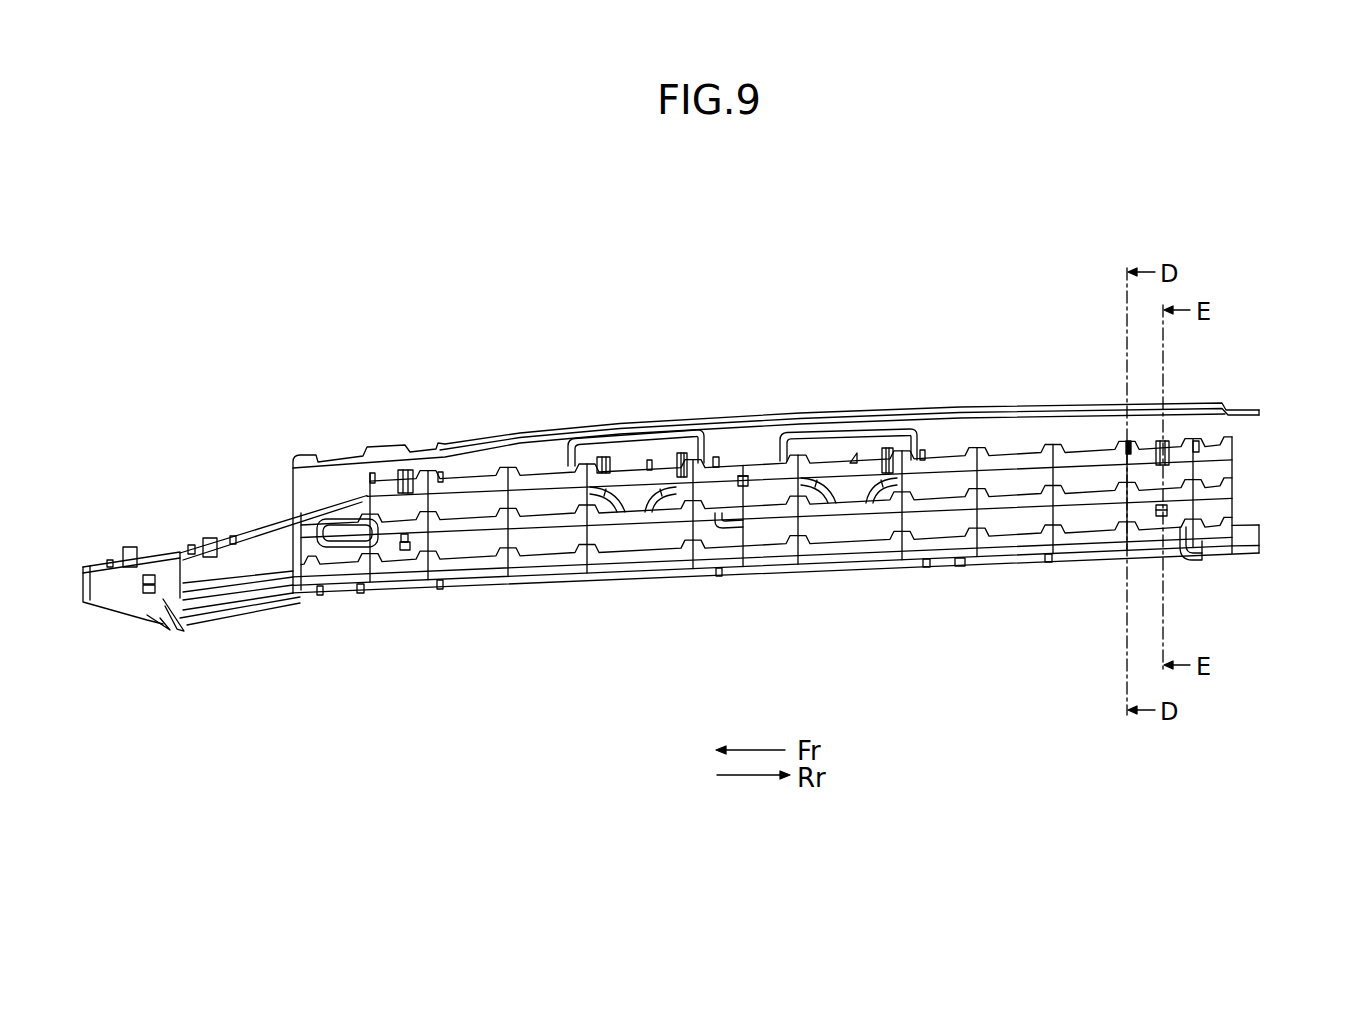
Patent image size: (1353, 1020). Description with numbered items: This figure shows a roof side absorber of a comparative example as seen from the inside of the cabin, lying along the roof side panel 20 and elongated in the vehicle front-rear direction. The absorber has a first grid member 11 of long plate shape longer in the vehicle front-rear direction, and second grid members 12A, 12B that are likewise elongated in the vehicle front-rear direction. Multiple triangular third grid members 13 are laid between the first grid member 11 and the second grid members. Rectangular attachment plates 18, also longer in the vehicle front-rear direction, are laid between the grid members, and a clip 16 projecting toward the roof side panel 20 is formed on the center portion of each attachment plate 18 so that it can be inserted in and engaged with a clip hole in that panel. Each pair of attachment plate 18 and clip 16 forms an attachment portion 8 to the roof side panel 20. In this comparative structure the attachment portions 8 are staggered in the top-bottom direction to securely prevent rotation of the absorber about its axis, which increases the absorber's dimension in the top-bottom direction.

The attachment portion 8 is at (400, 561).
The first grid member 11 is at (540, 480).
The second grid member 12A is at (470, 563).
The second grid member 12B is at (545, 522).
The third grid member 13 is at (300, 556).
The clip 16 is at (400, 540).
The attachment plate 18 is at (387, 548).
The roof side panel 20 is at (760, 416).